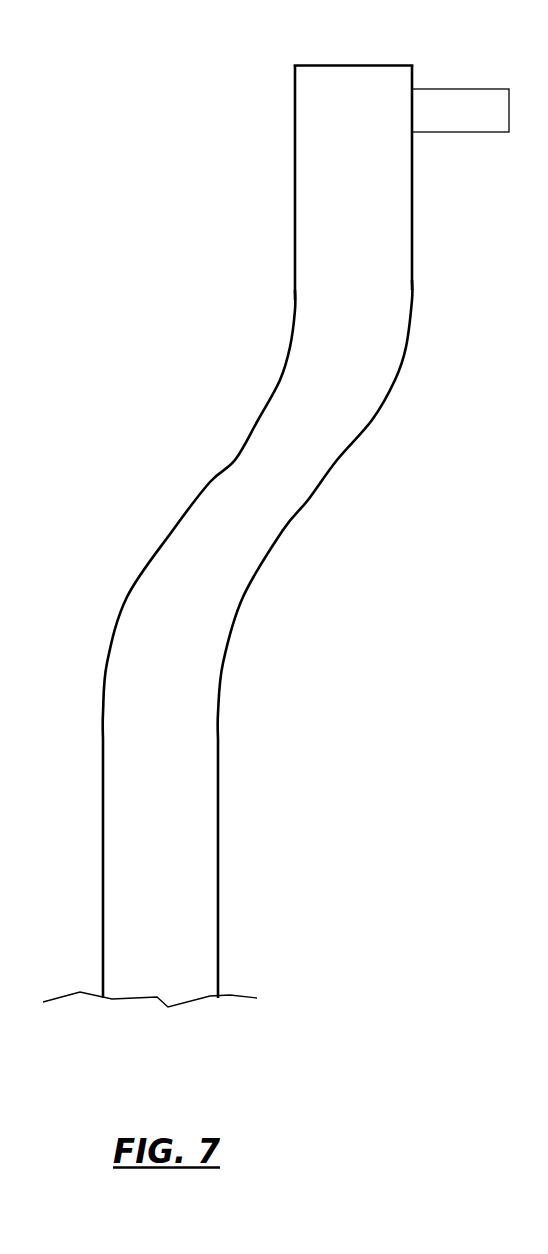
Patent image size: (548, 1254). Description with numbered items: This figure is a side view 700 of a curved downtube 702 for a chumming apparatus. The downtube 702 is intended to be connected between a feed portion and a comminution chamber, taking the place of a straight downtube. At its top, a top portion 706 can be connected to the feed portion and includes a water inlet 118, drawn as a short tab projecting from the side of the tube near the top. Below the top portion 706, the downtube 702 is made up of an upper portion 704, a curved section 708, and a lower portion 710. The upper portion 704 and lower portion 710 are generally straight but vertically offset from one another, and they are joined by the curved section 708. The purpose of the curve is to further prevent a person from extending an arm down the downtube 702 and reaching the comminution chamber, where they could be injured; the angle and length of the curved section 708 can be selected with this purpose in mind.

The side view 700 is at (133, 132).
The downtube 702 is at (270, 288).
The upper portion 704 is at (294, 130).
The top portion 706 is at (335, 65).
The curved section 708 is at (210, 480).
The lower portion 710 is at (218, 790).
The water inlet 118 is at (453, 132).